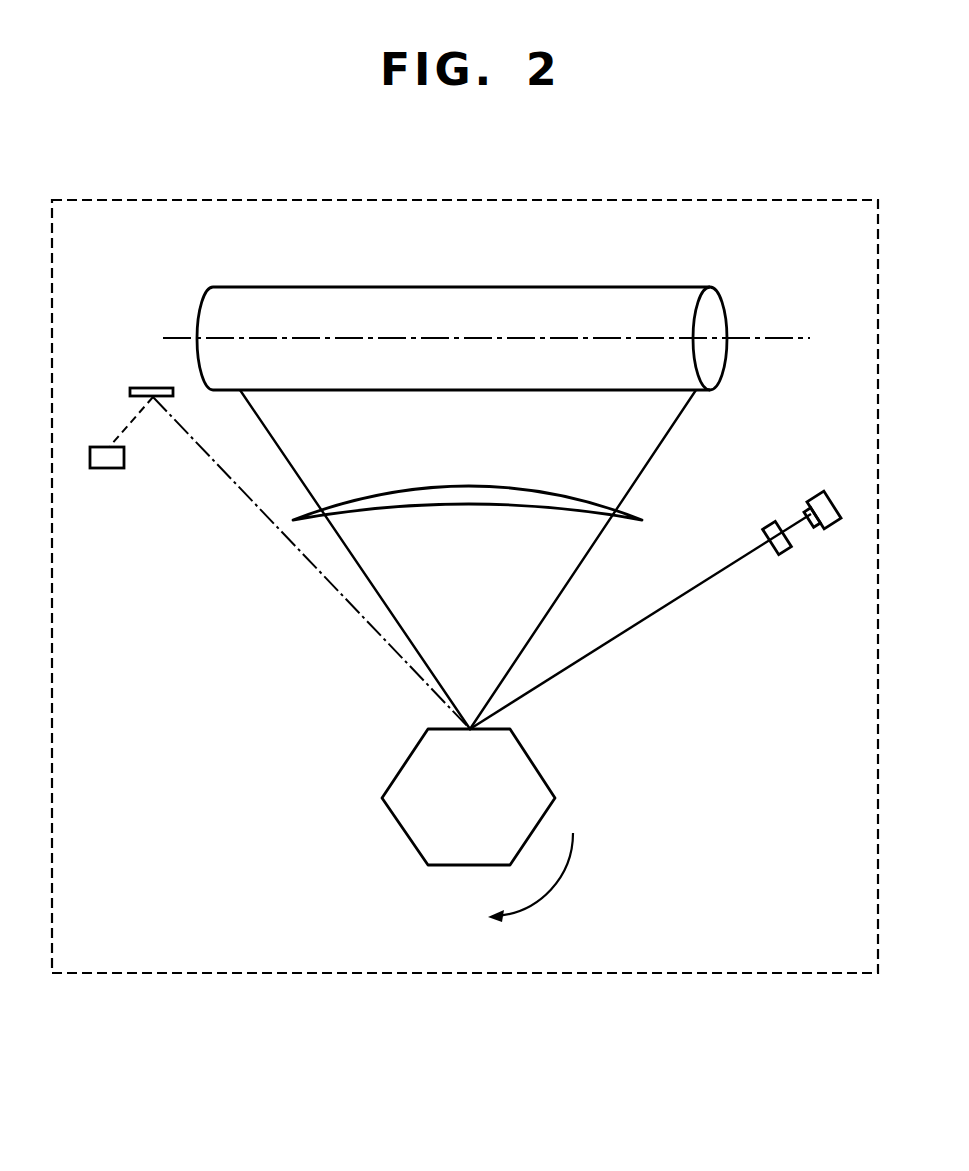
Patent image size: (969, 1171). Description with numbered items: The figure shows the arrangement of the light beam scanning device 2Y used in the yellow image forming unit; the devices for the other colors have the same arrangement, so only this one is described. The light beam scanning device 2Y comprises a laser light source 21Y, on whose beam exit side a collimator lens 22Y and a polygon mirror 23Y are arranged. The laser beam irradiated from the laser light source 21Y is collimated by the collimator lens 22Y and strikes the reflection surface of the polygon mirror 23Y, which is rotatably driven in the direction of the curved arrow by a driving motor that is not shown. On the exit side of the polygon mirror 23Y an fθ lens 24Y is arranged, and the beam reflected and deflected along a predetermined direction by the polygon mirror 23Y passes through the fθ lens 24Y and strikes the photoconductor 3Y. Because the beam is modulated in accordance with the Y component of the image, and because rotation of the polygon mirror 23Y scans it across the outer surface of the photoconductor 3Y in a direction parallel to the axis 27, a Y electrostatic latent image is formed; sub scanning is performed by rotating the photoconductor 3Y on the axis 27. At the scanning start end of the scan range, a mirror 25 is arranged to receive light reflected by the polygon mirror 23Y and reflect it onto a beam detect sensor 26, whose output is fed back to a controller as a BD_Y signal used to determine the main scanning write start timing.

The light beam scanning device 2Y is at (183, 200).
The photoconductor 3Y is at (286, 391).
The axis 27 is at (781, 335).
The mirror 25 is at (144, 386).
The beam detect sensor 26 is at (103, 469).
The fθ lens 24Y is at (390, 476).
The laser light source 21Y is at (823, 497).
The collimator lens 22Y is at (769, 558).
The polygon mirror 23Y is at (530, 750).